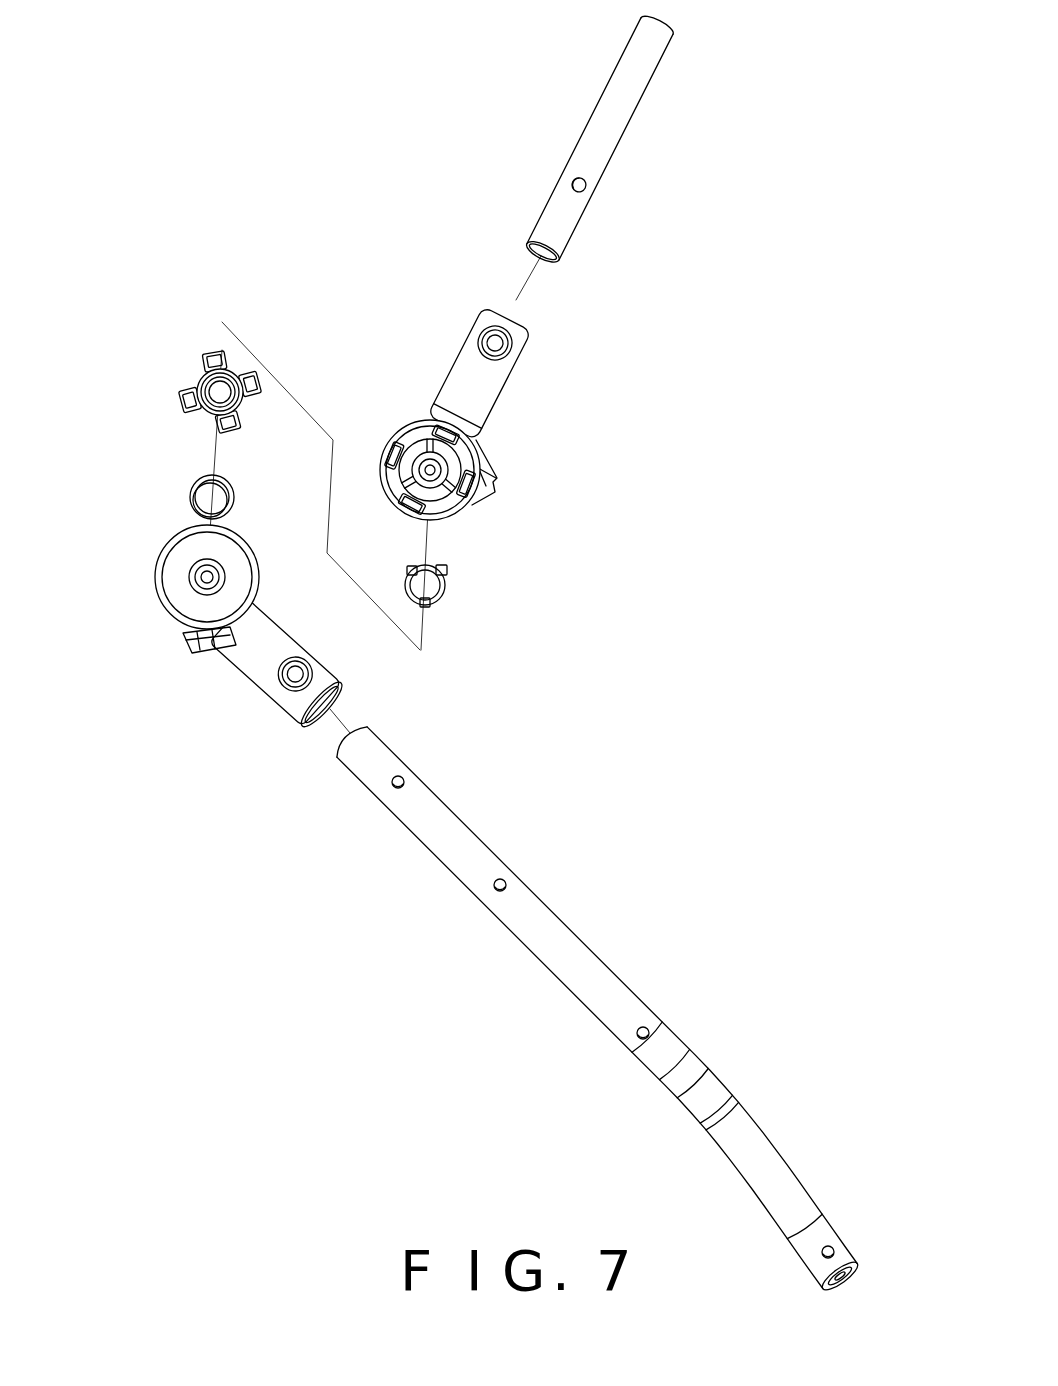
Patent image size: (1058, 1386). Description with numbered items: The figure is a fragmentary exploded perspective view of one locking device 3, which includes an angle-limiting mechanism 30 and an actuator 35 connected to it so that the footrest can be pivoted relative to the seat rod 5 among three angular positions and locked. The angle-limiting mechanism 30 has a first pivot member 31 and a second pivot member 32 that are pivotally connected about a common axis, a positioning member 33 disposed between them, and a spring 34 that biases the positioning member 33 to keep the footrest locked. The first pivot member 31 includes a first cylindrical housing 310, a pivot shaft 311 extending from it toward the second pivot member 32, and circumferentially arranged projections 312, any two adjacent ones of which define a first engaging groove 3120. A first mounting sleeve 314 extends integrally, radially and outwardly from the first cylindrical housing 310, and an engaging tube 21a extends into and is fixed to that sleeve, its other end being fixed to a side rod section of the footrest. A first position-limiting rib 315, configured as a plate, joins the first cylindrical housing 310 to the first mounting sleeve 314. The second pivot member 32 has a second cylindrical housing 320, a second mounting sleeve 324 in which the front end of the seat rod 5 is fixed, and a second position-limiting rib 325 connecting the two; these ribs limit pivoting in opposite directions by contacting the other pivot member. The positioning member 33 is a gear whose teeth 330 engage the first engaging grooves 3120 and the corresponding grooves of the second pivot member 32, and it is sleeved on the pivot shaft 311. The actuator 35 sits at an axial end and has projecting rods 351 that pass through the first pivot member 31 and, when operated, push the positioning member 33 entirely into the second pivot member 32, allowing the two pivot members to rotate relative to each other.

The locking device 3 is at (677, 577).
The seat rod 5 is at (436, 826).
The engaging tube 21a is at (572, 213).
The angle-limiting mechanism 30 is at (331, 262).
The first pivot member 31 is at (527, 472).
The second pivot member 32 is at (282, 601).
The positioning member 33 is at (200, 357).
The spring 34 is at (195, 485).
The actuator 35 is at (445, 600).
The first cylindrical housing 310 is at (413, 505).
The pivot shaft 311 is at (498, 473).
The projections 312 is at (396, 452).
The first mounting sleeve 314 is at (483, 384).
The first position-limiting rib 315 is at (492, 455).
The second cylindrical housing 320 is at (177, 592).
The second mounting sleeve 324 is at (275, 665).
The second position-limiting rib 325 is at (196, 652).
The teeth 330 is at (198, 398).
The projecting rods 351 is at (446, 572).
The first engaging groove 3120 is at (418, 440).